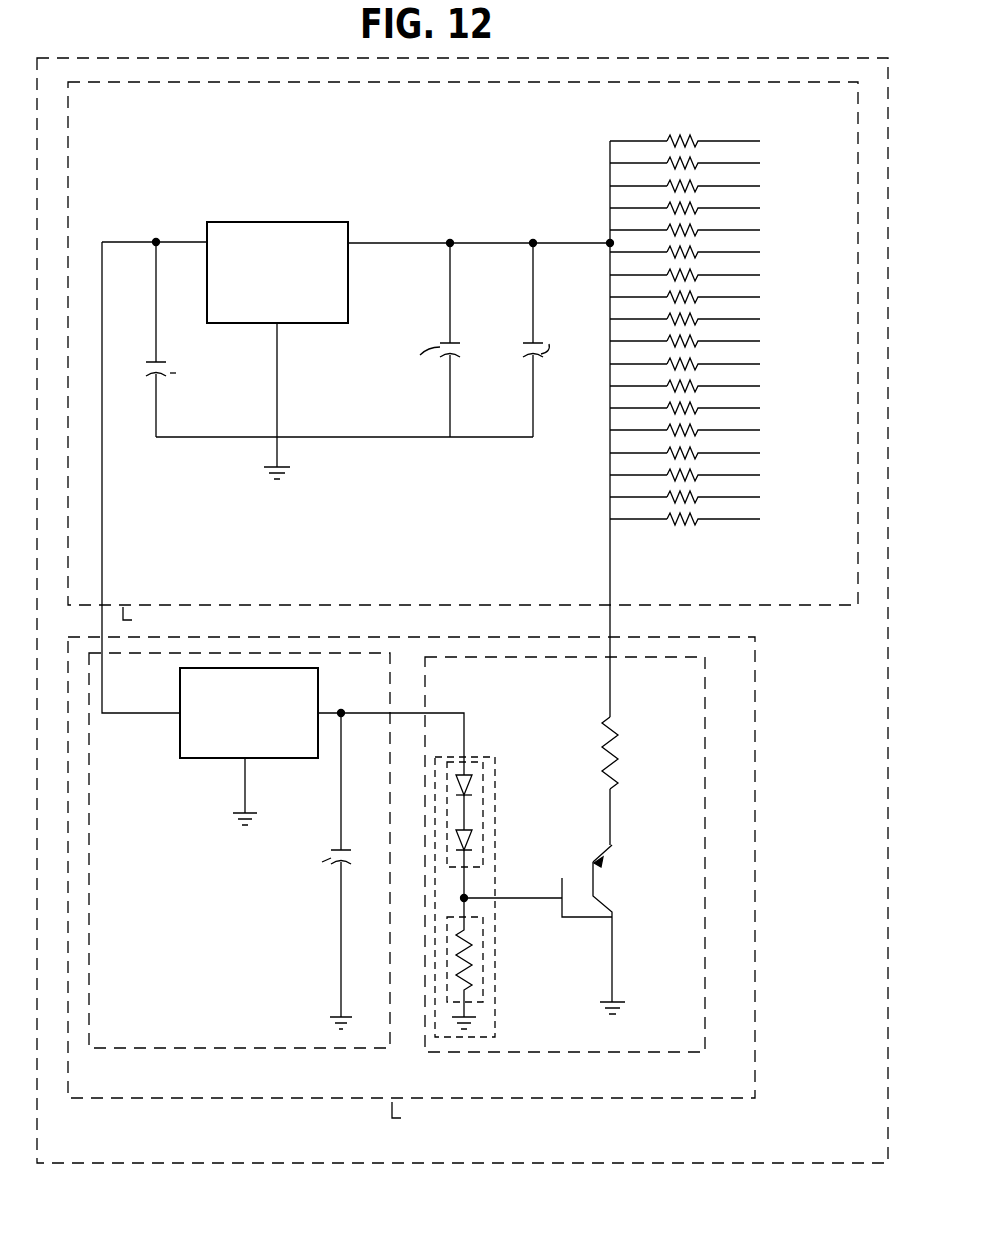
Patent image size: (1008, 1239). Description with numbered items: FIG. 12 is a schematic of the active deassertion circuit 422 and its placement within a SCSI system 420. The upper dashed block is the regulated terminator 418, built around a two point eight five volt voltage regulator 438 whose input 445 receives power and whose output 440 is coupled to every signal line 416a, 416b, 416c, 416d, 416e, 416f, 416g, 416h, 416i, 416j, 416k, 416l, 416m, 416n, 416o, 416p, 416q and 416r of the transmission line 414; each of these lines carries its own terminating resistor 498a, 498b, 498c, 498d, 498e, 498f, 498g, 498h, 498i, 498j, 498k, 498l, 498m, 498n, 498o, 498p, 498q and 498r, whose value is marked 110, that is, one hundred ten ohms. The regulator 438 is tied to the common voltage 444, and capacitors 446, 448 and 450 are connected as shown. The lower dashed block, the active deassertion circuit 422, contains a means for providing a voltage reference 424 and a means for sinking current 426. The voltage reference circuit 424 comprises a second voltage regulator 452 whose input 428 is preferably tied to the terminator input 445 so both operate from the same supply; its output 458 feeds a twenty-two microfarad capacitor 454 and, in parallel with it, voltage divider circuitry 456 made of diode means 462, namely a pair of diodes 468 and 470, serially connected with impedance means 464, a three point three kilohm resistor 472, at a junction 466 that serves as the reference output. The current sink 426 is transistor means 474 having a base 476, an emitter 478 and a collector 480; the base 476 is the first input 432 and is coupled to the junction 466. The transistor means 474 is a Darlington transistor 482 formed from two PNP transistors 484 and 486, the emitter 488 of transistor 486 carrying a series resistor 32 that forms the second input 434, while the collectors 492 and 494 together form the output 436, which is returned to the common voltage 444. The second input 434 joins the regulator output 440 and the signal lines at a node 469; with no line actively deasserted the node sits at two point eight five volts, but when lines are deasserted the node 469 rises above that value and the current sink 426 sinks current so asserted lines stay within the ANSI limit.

The resistor 32 is at (627, 753).
The SCSI bus 110 is at (724, 550).
The transmission line 414 is at (750, 541).
The signal line 416a is at (638, 152).
The signal line 416b is at (638, 174).
The signal line 416c is at (638, 197).
The signal line 416d is at (638, 219).
The signal line 416e is at (638, 241).
The signal line 416f is at (638, 263).
The signal line 416g is at (638, 286).
The signal line 416h is at (638, 308).
The signal line 416i is at (638, 330).
The signal line 416j is at (638, 352).
The signal line 416k is at (638, 375).
The signal line 416l is at (638, 397).
The signal line 416m is at (638, 419).
The signal line 416n is at (638, 441).
The signal line 416o is at (638, 464).
The signal line 416p is at (638, 486).
The signal line 416q is at (638, 508).
The signal line 416r is at (638, 530).
The 110 ohm resistor 498a is at (713, 149).
The 110 ohm resistor 498b is at (713, 171).
The 110 ohm resistor 498c is at (713, 194).
The 110 ohm resistor 498d is at (713, 216).
The 110 ohm resistor 498e is at (713, 238).
The 110 ohm resistor 498f is at (713, 260).
The 110 ohm resistor 498g is at (713, 283).
The 110 ohm resistor 498h is at (713, 305).
The 110 ohm resistor 498i is at (713, 327).
The 110 ohm resistor 498j is at (713, 349).
The 110 ohm resistor 498k is at (713, 372).
The 110 ohm resistor 498l is at (713, 394).
The 110 ohm resistor 498m is at (713, 416).
The 110 ohm resistor 498n is at (713, 438).
The 110 ohm resistor 498o is at (713, 461).
The 110 ohm resistor 498p is at (713, 483).
The 110 ohm resistor 498q is at (713, 505).
The 110 ohm resistor 498r is at (713, 527).
The regulated terminator 418 is at (761, 608).
The SCSI system 420 is at (583, 1165).
The active deassertion circuit 422 is at (316, 1100).
The means for providing a voltage reference 424 is at (222, 1050).
The means for sinking current 426 is at (622, 1054).
The input 428 is at (161, 716).
The first input 432 is at (538, 912).
The second input 434 is at (612, 673).
The output 436 is at (604, 998).
The 2.85 volt voltage regulator 438 is at (337, 325).
The output 440 is at (417, 241).
The common voltage 444 is at (292, 478).
The input 445 is at (188, 240).
The capacitor 446 is at (168, 380).
The capacitor 448 is at (447, 340).
The capacitor 450 is at (521, 340).
The voltage regulator 452 is at (210, 760).
The capacitor 454 is at (335, 849).
The voltage divider circuitry 456 is at (467, 751).
The output 458 is at (352, 703).
The diode means 462 is at (438, 778).
The impedance means 464 is at (442, 944).
The junction 466 is at (462, 897).
The diode 468 is at (477, 775).
The node 469 is at (605, 249).
The diode 470 is at (476, 832).
The resistor 472 is at (468, 973).
The transistor means 474 is at (561, 952).
The base 476 is at (543, 895).
The emitter 478 is at (611, 800).
The collector 480 is at (614, 978).
The Darlington transistor 482 is at (632, 908).
The PNP transistor 484 is at (600, 918).
The PNP transistor 486 is at (569, 883).
The emitter 488 is at (613, 830).
The collector 492 is at (590, 954).
The collector 494 is at (616, 911).